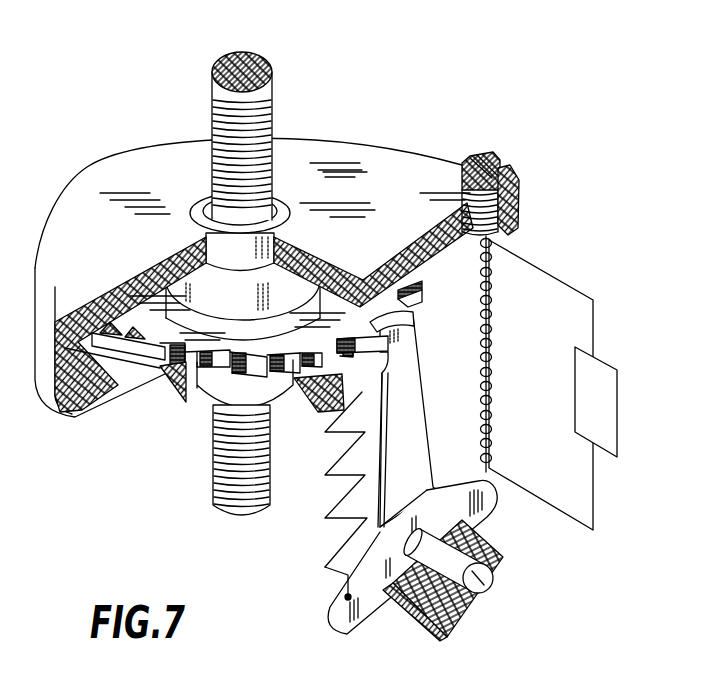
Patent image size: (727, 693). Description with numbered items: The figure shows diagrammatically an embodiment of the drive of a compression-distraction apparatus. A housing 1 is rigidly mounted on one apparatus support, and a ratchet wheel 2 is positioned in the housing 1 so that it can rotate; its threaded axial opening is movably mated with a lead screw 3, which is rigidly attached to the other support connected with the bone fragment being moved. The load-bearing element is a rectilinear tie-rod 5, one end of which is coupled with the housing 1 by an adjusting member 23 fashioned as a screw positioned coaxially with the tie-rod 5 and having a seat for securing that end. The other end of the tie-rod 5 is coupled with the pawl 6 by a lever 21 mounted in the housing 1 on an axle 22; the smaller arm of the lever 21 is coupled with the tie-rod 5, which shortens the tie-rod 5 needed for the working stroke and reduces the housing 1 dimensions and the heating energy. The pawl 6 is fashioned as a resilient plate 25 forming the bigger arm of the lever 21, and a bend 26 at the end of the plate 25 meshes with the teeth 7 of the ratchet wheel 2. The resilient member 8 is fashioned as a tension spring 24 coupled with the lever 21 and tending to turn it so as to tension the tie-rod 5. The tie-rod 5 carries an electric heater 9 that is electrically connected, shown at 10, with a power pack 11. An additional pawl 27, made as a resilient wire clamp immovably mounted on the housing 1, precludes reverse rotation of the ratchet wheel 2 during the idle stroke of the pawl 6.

The housing 1 is at (388, 160).
The ratchet wheel 2 is at (238, 382).
The lead screw 3 is at (213, 474).
The tie-rod 5 is at (489, 380).
The pawl 6 is at (405, 417).
The ratchet wheel teeth 7 is at (410, 343).
The resilient member 8 is at (340, 488).
The electric heater 9 is at (488, 427).
The electrical connection 10 is at (568, 285).
The power pack 11 is at (583, 385).
The lever 21 is at (488, 505).
The axle 22 is at (488, 590).
The adjusting member 23 is at (486, 158).
The tension spring 24 is at (337, 550).
The resilient plate 25 is at (410, 432).
The bend 26 is at (416, 314).
The additional pawl 27 is at (128, 378).